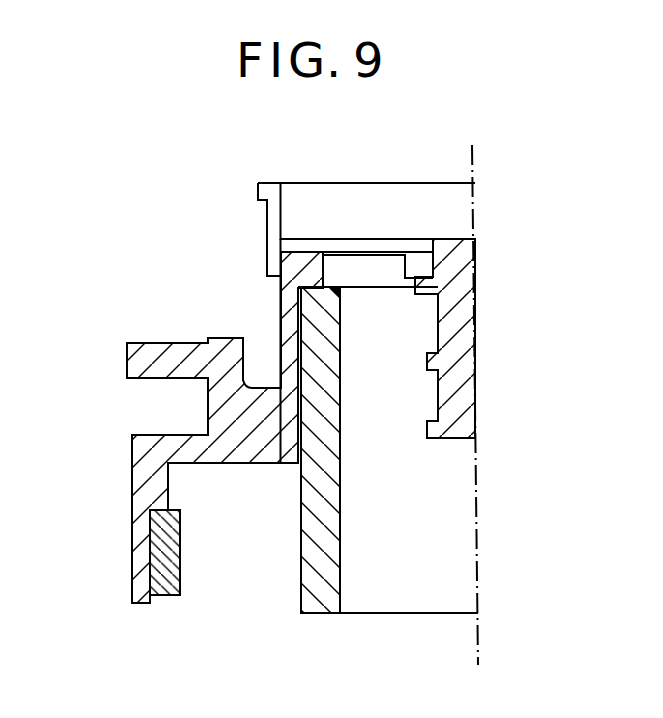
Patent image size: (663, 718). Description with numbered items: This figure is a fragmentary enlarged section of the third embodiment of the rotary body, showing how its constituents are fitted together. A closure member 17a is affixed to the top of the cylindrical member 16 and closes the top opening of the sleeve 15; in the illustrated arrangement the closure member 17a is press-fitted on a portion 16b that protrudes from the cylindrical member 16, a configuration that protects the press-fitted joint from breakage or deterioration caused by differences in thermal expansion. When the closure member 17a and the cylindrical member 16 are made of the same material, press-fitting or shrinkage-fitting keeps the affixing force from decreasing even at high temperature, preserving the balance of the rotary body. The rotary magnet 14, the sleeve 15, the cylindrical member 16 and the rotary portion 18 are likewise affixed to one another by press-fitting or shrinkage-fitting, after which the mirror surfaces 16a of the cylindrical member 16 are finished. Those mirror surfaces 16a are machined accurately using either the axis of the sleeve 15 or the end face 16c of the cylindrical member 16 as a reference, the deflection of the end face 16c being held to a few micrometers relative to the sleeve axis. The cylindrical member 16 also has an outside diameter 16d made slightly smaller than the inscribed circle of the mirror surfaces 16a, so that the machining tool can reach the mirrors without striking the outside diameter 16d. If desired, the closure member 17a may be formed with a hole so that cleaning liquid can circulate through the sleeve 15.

The rotary magnet 14 is at (180, 550).
The sleeve 15 is at (320, 525).
The cylindrical member 16 is at (232, 392).
The mirror surfaces 16a is at (127, 363).
The protruding portion 16b is at (285, 265).
The end face 16c is at (218, 338).
The outside diameter 16d is at (132, 513).
The closure member 17a is at (263, 231).
The rotary portion 18 is at (447, 350).